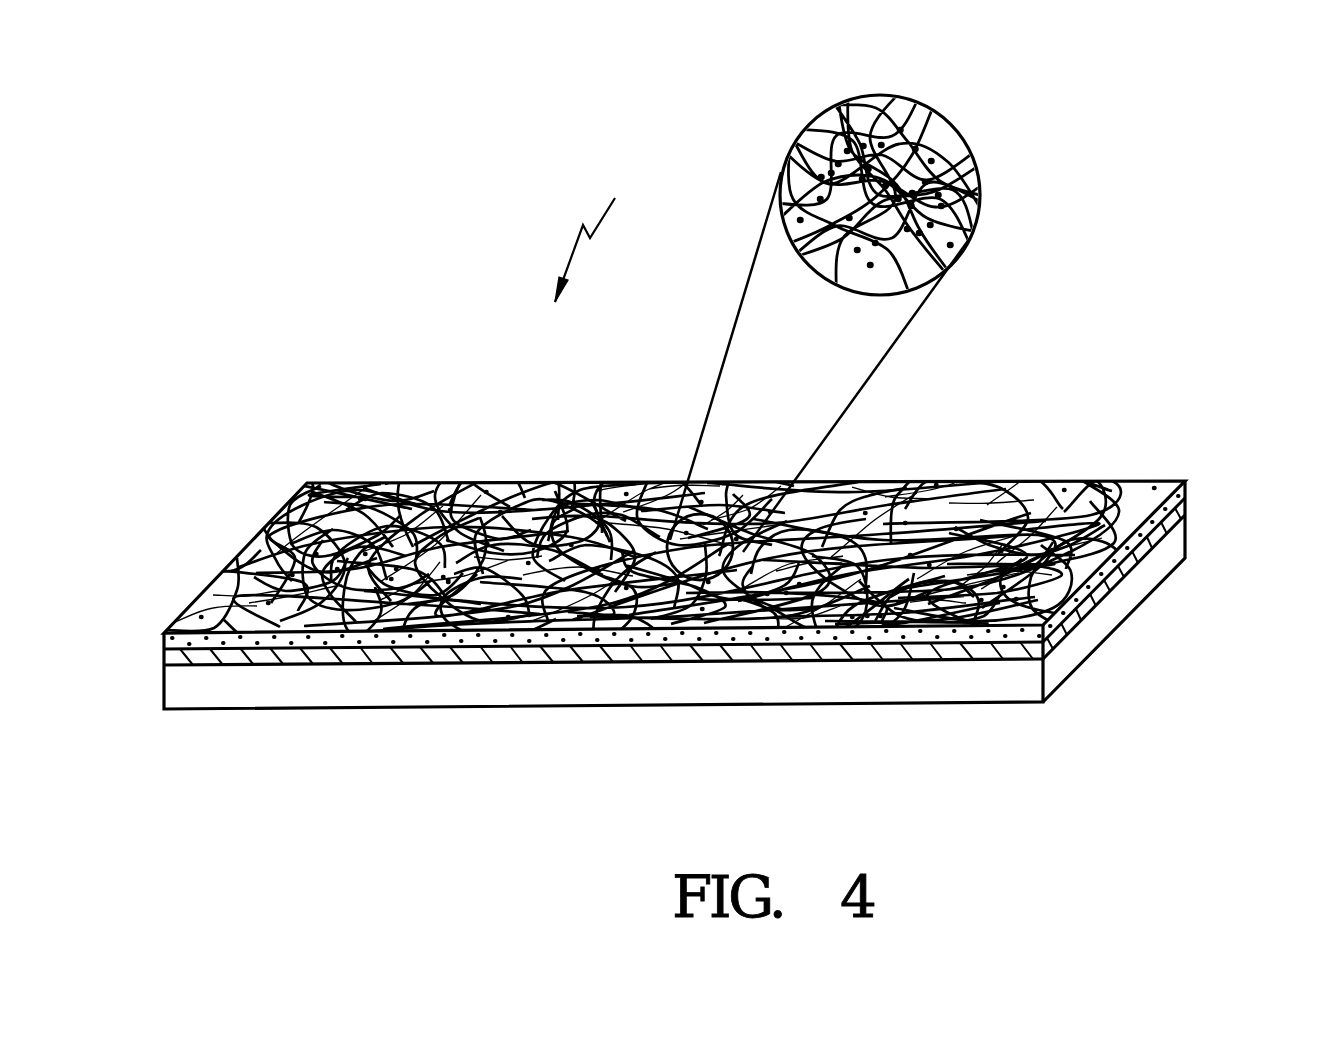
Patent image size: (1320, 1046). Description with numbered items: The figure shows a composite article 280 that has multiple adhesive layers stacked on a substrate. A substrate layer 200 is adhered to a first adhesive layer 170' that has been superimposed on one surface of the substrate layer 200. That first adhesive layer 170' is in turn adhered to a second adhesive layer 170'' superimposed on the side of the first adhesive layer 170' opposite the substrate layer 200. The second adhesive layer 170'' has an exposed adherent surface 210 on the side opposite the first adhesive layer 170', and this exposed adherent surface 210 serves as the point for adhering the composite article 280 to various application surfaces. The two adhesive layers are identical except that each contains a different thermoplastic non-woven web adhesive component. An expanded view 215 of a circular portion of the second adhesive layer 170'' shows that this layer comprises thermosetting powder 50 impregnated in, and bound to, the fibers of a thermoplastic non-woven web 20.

The substrate layer 200 is at (1082, 652).
The first adhesive layer 170' is at (737, 580).
The second adhesive layer 170'' is at (731, 553).
The exposed adherent surface 210 is at (372, 483).
The expanded view 215 is at (902, 96).
The thermosetting powder 50 is at (977, 197).
The thermoplastic non-woven web 20 is at (977, 233).
The composite article 280 is at (606, 232).